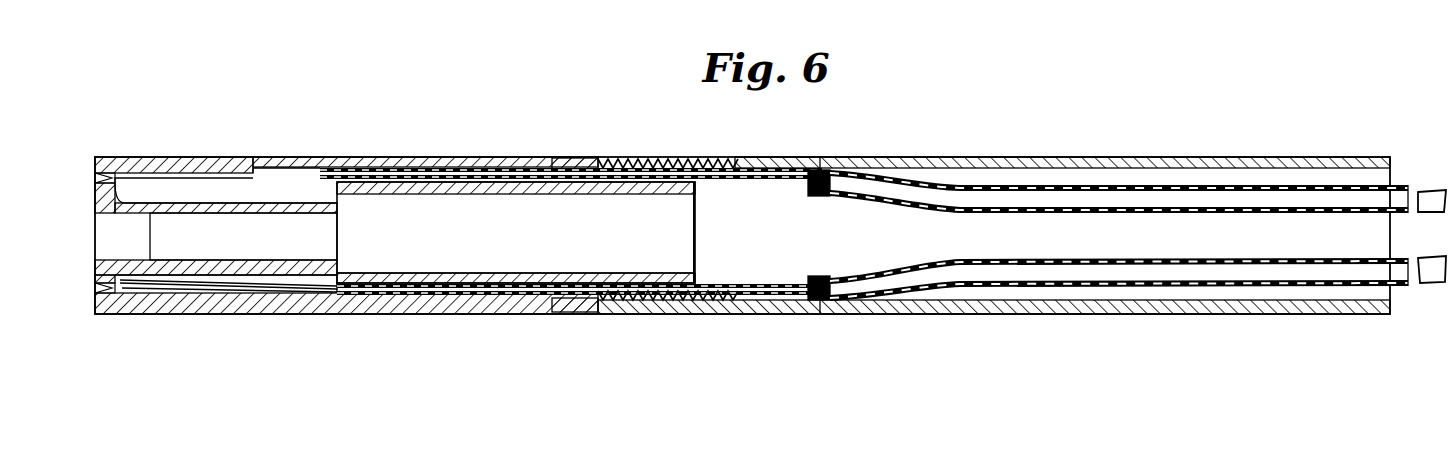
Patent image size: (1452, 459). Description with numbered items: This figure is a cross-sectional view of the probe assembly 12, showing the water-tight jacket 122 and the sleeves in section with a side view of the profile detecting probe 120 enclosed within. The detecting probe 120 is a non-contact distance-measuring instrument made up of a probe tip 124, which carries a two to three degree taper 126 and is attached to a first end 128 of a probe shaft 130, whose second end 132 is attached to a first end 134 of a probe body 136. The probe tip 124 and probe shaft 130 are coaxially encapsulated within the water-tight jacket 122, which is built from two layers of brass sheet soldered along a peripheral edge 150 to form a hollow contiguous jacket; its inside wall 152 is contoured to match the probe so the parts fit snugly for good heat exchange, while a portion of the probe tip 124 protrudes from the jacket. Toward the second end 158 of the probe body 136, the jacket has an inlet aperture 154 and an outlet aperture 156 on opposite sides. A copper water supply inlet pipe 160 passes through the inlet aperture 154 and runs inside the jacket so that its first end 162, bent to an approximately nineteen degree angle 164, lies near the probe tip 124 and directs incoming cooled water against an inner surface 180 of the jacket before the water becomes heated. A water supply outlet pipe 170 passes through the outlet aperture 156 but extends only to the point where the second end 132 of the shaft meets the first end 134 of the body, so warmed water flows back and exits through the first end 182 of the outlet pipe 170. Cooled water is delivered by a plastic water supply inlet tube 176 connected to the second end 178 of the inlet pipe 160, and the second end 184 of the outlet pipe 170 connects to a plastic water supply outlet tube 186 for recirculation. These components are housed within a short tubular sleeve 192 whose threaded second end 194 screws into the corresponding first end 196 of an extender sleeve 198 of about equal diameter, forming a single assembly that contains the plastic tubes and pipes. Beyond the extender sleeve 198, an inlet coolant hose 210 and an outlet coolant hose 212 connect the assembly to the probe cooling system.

The probe assembly 12 is at (265, 103).
The profile detecting probe 120 is at (388, 248).
The water-tight jacket 122 is at (277, 183).
The probe tip 124 is at (157, 228).
The taper 126 is at (128, 215).
The first end of probe shaft 128 is at (157, 233).
The probe shaft 130 is at (207, 222).
The second end of probe shaft 132 is at (318, 275).
The first end of probe body 134 is at (380, 272).
The probe body 136 is at (462, 252).
The peripheral edge 150 is at (96, 177).
The inside wall 152 is at (277, 250).
The inlet aperture 154 is at (562, 297).
The outlet aperture 156 is at (565, 162).
The second end of probe body 158 is at (692, 238).
The water supply inlet pipe 160 is at (722, 290).
The first end of inlet pipe 162 is at (228, 285).
The angle 164 is at (150, 290).
The water supply outlet pipe 170 is at (690, 160).
The plastic water supply inlet tube 176 is at (955, 282).
The second end of inlet pipe 178 is at (822, 300).
The inner surface 180 is at (125, 288).
The first end of outlet pipe 182 is at (338, 162).
The second end of outlet pipe 184 is at (797, 160).
The plastic water supply outlet tube 186 is at (1043, 198).
The short tubular sleeve 192 is at (323, 190).
The second end of short sleeve 194 is at (617, 298).
The first end of extender sleeve 196 is at (675, 300).
The extender sleeve 198 is at (948, 158).
The inlet coolant hose 210 is at (1440, 278).
The outlet coolant hose 212 is at (1437, 195).